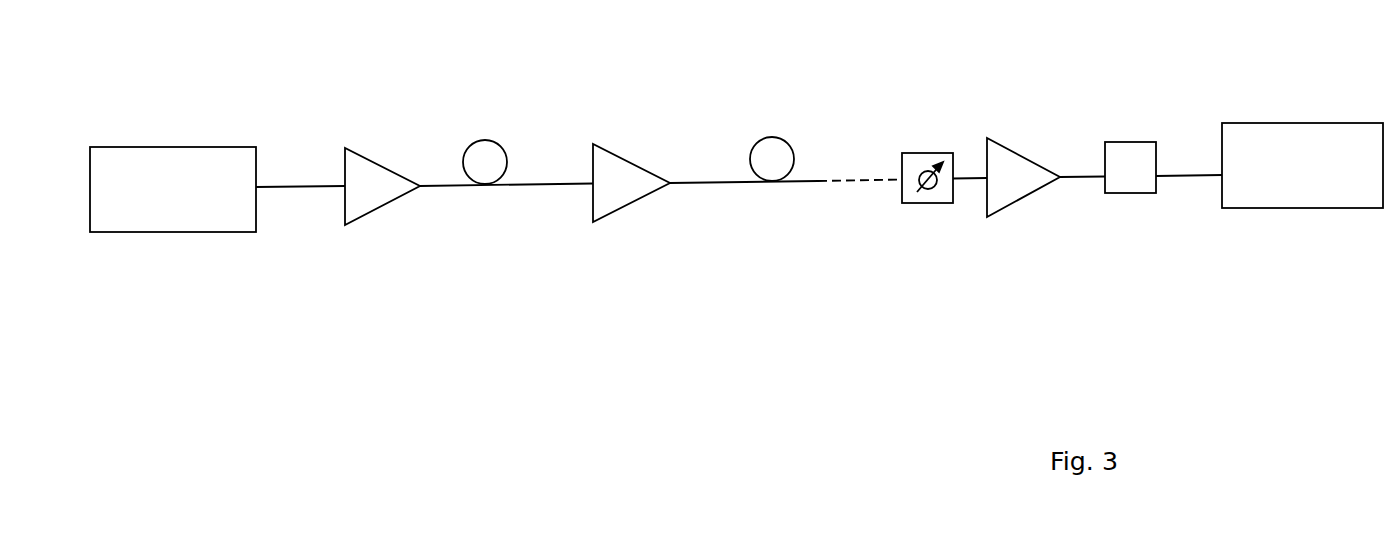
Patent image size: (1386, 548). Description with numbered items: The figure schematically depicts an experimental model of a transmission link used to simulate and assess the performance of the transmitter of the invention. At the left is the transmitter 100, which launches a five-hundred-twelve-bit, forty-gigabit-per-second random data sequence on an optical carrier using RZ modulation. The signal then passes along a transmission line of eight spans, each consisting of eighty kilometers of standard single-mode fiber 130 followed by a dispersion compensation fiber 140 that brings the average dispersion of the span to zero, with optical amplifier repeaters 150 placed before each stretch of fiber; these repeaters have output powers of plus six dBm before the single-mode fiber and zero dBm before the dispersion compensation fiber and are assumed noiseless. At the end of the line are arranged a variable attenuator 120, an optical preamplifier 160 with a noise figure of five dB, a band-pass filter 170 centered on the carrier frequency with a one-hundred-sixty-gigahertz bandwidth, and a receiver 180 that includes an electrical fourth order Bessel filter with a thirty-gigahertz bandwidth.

The transmitter 100 is at (157, 147).
The optical amplifier repeaters 150 is at (382, 166).
The single-mode fiber 130 is at (492, 142).
The dispersion compensation fiber 140 is at (779, 137).
The variable attenuator 120 is at (932, 153).
The optical preamplifier 160 is at (1025, 158).
The band-pass filter 170 is at (1133, 142).
The receiver 180 is at (1327, 123).